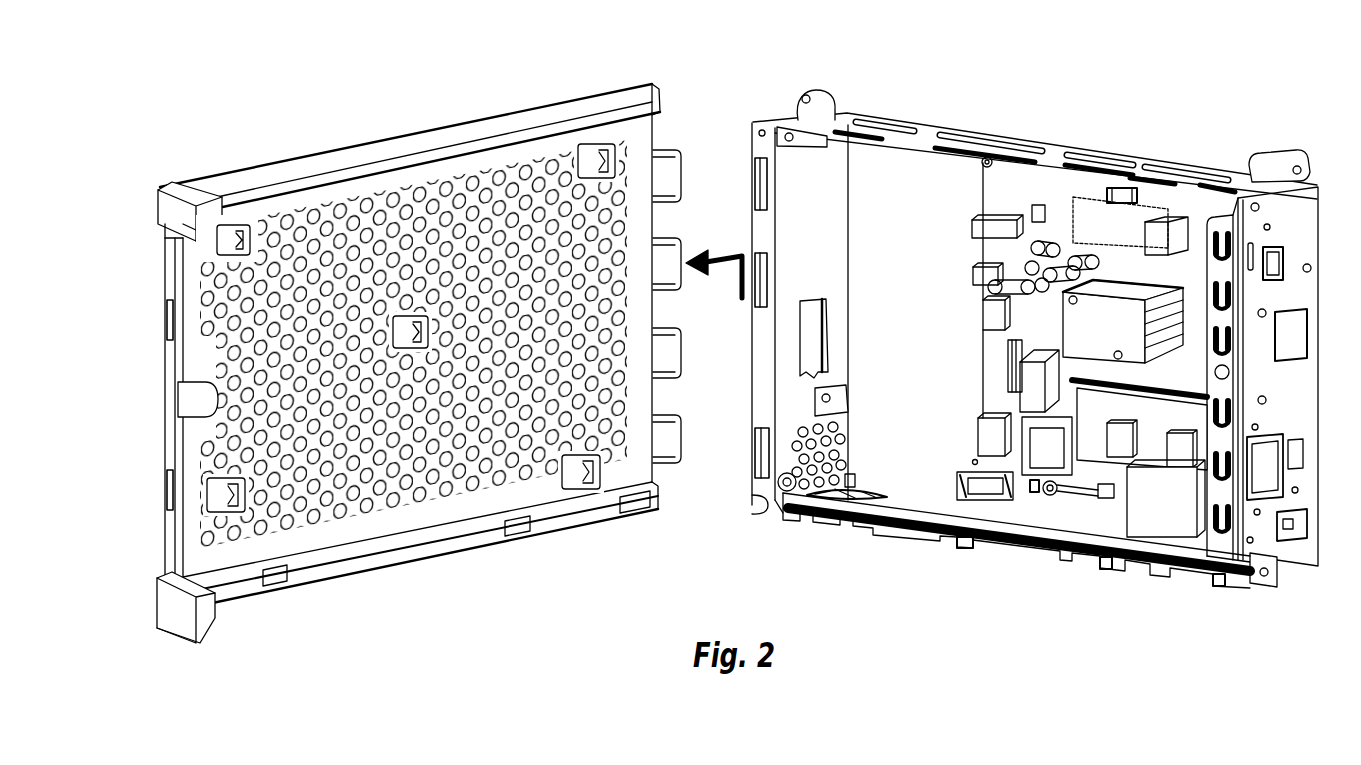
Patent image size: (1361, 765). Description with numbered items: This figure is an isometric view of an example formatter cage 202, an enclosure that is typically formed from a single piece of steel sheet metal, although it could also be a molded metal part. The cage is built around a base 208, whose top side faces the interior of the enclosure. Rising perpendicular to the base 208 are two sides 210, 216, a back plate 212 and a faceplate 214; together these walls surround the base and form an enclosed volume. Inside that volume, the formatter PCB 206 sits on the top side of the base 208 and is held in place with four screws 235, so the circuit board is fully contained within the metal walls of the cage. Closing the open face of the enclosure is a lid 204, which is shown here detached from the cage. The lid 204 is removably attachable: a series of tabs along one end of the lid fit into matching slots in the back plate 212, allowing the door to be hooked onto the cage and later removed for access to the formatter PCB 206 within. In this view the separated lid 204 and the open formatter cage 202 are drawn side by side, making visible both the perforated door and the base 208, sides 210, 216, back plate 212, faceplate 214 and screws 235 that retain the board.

The formatter cage 202 is at (1002, 96).
The lid 204 is at (326, 150).
The formatter PCB 206 is at (1150, 195).
The base 208 is at (934, 334).
The side 210 is at (1099, 530).
The back plate 212 is at (830, 212).
The faceplate 214 is at (1294, 388).
The side 216 is at (1052, 152).
The screws 235 is at (1048, 493).